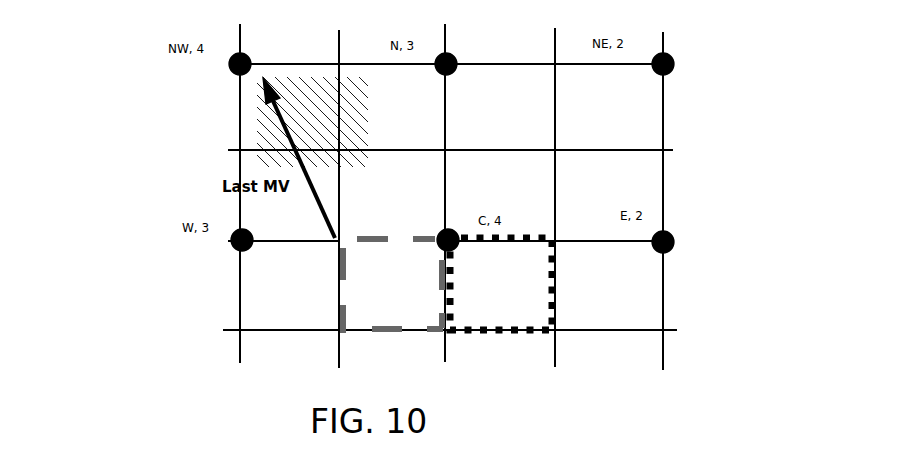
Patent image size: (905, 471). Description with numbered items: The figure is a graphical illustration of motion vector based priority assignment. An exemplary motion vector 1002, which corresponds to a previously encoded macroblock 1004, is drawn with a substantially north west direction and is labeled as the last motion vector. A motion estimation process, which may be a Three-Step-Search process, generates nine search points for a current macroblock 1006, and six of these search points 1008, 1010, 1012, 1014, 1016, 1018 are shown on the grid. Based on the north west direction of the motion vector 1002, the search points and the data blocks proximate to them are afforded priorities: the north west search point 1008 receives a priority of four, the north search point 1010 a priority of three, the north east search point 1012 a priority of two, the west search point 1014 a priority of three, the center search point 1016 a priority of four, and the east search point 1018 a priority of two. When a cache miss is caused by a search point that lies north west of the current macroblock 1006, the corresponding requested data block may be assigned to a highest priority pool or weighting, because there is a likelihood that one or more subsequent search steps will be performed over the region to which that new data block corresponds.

The motion vector 1002 is at (273, 115).
The previously encoded macroblock 1004 is at (363, 297).
The current macroblock 1006 is at (510, 290).
The search point 1008 is at (230, 64).
The search point 1010 is at (455, 57).
The search point 1012 is at (674, 65).
The search point 1014 is at (169, 242).
The search point 1016 is at (455, 232).
The search point 1018 is at (673, 245).